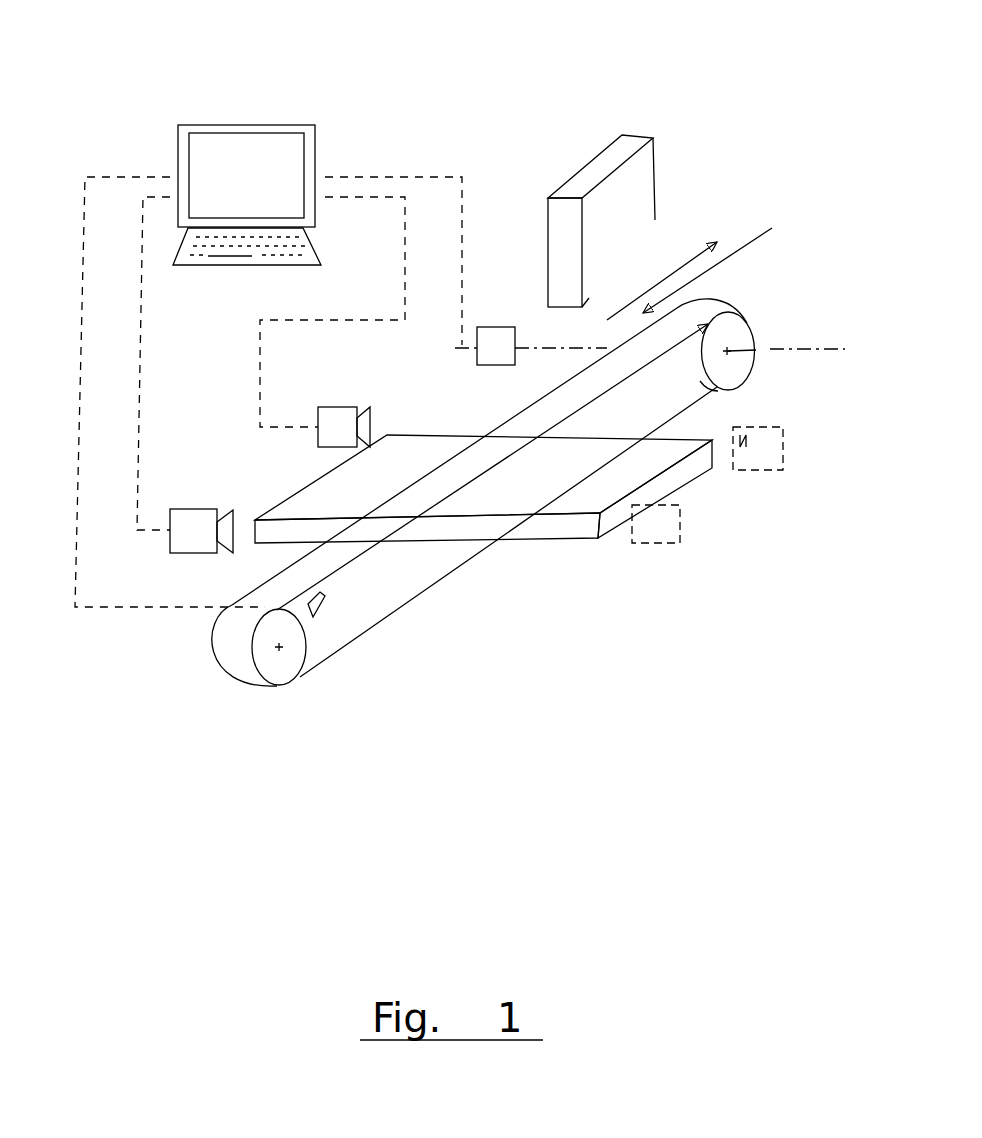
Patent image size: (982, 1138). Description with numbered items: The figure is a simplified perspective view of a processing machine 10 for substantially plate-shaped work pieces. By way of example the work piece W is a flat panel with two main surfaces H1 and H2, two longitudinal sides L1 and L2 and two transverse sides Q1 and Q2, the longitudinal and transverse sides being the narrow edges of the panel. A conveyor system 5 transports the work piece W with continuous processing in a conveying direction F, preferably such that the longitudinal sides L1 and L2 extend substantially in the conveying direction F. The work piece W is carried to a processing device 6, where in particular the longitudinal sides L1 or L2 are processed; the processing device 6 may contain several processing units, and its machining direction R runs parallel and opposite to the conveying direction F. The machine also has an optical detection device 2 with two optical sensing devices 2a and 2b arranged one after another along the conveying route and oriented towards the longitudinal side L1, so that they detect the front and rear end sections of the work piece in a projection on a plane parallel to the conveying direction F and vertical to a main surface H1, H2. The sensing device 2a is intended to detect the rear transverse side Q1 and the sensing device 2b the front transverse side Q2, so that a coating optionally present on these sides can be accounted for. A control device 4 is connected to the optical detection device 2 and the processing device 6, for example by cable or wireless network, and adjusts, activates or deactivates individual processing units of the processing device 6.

The optical detection device 2 is at (220, 323).
The optical sensing device 2a is at (193, 528).
The optical sensing device 2b is at (333, 423).
The control device 4 is at (234, 147).
The conveyor system 5 is at (395, 593).
The processing device 6 is at (587, 177).
The processing machine 10 is at (738, 719).
The conveying direction F is at (662, 279).
The machining direction R is at (708, 270).
The longitudinal side L1 is at (297, 481).
The longitudinal side L2 is at (673, 482).
The main surface H1 is at (632, 463).
The main surface H2 is at (592, 547).
The transverse side Q1 is at (533, 523).
The transverse side Q2 is at (457, 430).
The work piece W is at (553, 527).